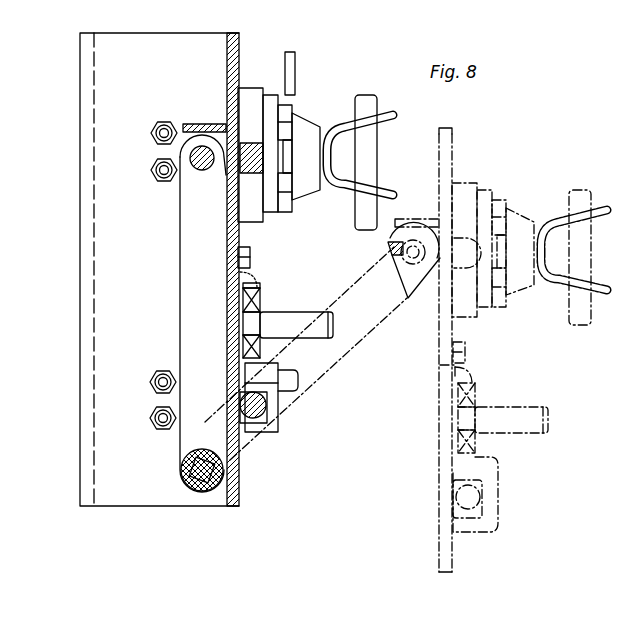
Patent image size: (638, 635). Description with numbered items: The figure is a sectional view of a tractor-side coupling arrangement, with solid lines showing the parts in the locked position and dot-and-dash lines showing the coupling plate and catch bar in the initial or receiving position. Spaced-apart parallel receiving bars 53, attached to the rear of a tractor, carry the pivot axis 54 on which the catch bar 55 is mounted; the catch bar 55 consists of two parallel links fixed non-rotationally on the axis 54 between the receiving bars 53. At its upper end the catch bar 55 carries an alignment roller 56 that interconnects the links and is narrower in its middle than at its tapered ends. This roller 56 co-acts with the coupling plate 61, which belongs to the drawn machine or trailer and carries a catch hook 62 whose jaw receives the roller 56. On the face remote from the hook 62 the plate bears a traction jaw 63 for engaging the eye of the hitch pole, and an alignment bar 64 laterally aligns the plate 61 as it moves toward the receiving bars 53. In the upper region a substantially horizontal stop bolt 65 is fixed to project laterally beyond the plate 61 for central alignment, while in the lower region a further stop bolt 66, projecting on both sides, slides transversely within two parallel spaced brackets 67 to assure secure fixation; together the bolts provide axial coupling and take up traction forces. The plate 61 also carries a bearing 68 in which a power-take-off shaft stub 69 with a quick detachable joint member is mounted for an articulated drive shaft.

The receiving bar 53 is at (80, 74).
The pivot axis 54 is at (199, 480).
The catch bar 55 is at (192, 292).
The alignment roller 56 is at (198, 170).
The coupling plate 61 is at (240, 50).
The catch hook 62 is at (182, 155).
The traction jaw 63 is at (394, 119).
The alignment bar 64 is at (215, 124).
The stop bolt 65 is at (263, 158).
The stop bolt 66 is at (242, 403).
The bracket 67 is at (494, 472).
The bearing 68 is at (478, 395).
The power-take-off shaft stub 69 is at (293, 318).